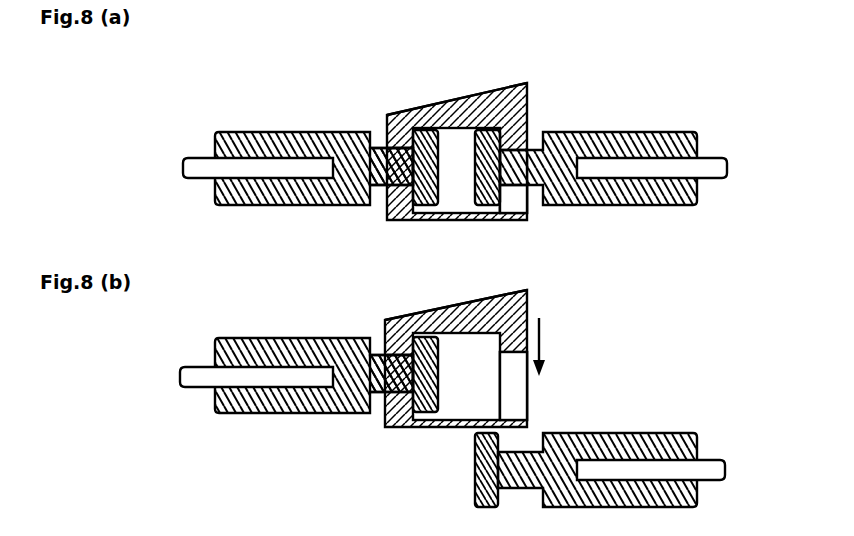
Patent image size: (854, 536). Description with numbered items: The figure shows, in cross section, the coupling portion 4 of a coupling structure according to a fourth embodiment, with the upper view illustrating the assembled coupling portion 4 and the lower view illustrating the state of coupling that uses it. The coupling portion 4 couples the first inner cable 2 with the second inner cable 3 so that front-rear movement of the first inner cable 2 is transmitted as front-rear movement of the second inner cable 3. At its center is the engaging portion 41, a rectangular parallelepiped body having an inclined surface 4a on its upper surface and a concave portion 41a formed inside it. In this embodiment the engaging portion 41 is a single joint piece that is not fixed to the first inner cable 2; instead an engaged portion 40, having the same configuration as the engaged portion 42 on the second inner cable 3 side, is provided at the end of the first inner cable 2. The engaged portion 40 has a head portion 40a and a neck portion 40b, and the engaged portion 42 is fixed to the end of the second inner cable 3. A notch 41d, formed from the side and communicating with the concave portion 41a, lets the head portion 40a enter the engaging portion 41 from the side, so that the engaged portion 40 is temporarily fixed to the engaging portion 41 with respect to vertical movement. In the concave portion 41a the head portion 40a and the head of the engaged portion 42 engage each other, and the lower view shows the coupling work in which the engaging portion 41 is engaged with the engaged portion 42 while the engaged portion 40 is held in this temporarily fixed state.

The first inner cable 2 is at (202, 168).
The second inner cable 3 is at (711, 167).
The coupling portion 4 is at (664, 83).
The inclined surface 4a is at (447, 101).
The engaged portion 40 is at (333, 132).
The head portion 40a is at (423, 413).
The neck portion 40b is at (380, 393).
The engaging portion 41 is at (483, 112).
The concave portion 41a is at (492, 213).
The notch 41d is at (383, 150).
The engaged portion 42 is at (562, 140).